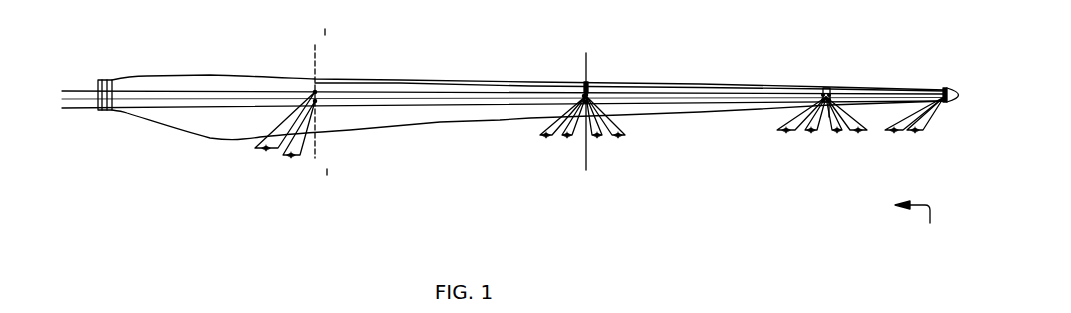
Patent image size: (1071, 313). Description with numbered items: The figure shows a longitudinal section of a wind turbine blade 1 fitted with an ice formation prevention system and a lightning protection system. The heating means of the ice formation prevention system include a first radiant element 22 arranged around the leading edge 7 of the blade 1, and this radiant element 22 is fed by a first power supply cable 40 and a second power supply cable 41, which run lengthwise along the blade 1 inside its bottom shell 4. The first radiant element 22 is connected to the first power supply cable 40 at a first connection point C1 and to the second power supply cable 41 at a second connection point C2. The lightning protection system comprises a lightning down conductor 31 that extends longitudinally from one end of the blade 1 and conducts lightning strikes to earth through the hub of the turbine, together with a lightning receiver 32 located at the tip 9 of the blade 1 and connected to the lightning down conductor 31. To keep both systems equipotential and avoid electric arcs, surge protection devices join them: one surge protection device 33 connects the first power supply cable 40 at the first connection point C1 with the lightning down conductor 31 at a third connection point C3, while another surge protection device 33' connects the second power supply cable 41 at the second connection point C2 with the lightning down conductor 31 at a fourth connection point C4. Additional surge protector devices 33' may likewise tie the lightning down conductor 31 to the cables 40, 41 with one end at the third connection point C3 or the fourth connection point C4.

The blade 1 is at (913, 225).
The bottom shell 4 is at (375, 118).
The leading edge 7 is at (533, 82).
The tip 9 is at (952, 88).
The first radiant element 22 is at (399, 80).
The lightning down conductor 31 is at (82, 100).
The lightning receiver 32 is at (943, 103).
The surge protection device 33 is at (594, 133).
The surge protection device 33' is at (612, 141).
The first power supply cable 40 is at (492, 91).
The second power supply cable 41 is at (492, 111).
The first connection point C1 is at (315, 92).
The second connection point C2 is at (454, 108).
The third connection point C3 is at (315, 101).
The fourth connection point C4 is at (583, 95).